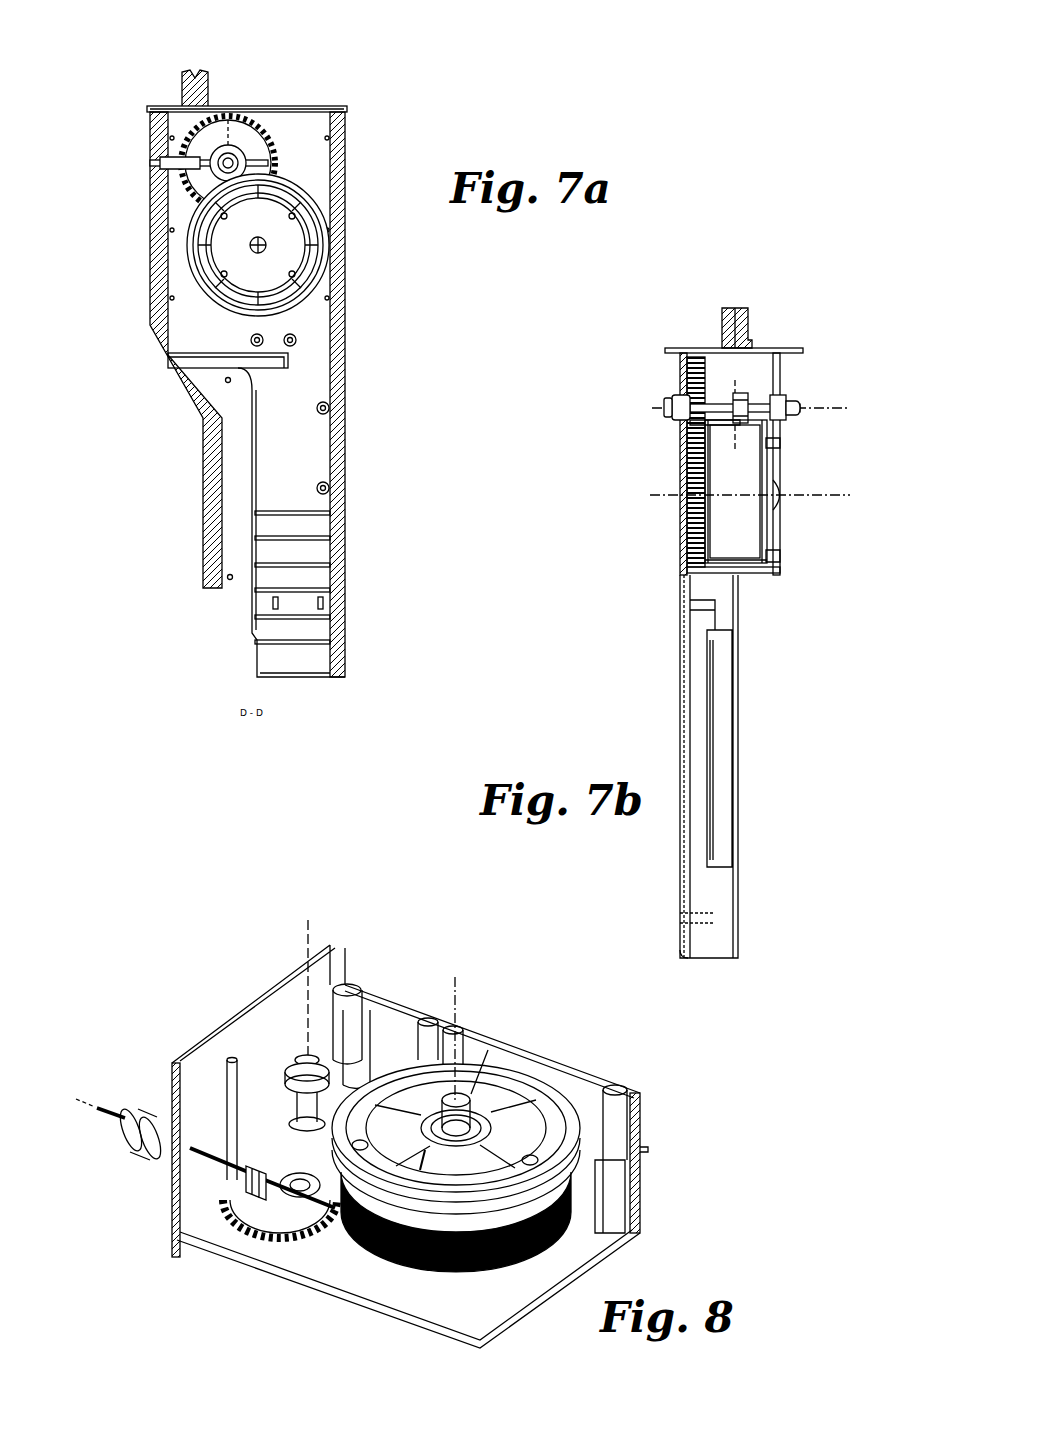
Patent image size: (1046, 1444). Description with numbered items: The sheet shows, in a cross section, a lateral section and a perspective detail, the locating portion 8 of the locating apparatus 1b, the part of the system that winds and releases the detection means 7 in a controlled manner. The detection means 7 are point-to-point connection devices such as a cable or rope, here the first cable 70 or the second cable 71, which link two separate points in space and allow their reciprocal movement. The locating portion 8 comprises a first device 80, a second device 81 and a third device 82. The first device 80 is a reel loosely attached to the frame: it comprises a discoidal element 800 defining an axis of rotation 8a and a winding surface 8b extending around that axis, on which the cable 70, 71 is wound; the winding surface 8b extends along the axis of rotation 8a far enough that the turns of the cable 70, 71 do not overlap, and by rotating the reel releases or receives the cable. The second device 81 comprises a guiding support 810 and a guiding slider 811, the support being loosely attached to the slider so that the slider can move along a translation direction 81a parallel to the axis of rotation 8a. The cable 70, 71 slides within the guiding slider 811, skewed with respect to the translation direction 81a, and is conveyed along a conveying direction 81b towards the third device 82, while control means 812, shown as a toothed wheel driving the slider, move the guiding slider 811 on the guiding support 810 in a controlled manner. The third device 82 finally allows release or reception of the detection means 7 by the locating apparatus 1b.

In FIG. 7A, the locating apparatus 1b is at (393, 343).
In FIG. 7B, the locating apparatus 1b is at (648, 582).
In FIG. 8, the detection means 7 is at (425, 1277).
In FIG. 8, the first cable 70 is at (115, 1108).
In FIG. 8, the second cable 71 is at (120, 1130).
In FIG. 7A, the locating portion 8 is at (130, 295).
In FIG. 7B, the locating portion 8 is at (638, 350).
In FIG. 7B, the axis of rotation 8a is at (673, 497).
In FIG. 8, the axis of rotation 8a is at (458, 1012).
In FIG. 7B, the winding surface 8b is at (755, 547).
In FIG. 8, the winding surface 8b is at (507, 1217).
In FIG. 7A, the first device 80 is at (330, 227).
In FIG. 7B, the first device 80 is at (765, 597).
In FIG. 8, the first device 80 is at (490, 1300).
In FIG. 7A, the discoidal element 800 is at (258, 245).
In FIG. 7B, the discoidal element 800 is at (768, 533).
In FIG. 8, the discoidal element 800 is at (533, 1087).
In FIG. 7A, the second device 81 is at (178, 188).
In FIG. 7B, the second device 81 is at (807, 393).
In FIG. 8, the second device 81 is at (226, 1047).
In FIG. 7B, the translation direction 81a is at (827, 408).
In FIG. 8, the translation direction 81a is at (307, 940).
In FIG. 7A, the conveying direction 81b is at (245, 148).
In FIG. 7B, the conveying direction 81b is at (700, 428).
In FIG. 8, the conveying direction 81b is at (84, 1105).
In FIG. 7A, the guiding support 810 is at (247, 147).
In FIG. 7B, the guiding support 810 is at (680, 397).
In FIG. 8, the guiding support 810 is at (294, 1117).
In FIG. 7A, the guiding slider 811 is at (150, 168).
In FIG. 7B, the guiding slider 811 is at (733, 402).
In FIG. 8, the guiding slider 811 is at (250, 1185).
In FIG. 7A, the control means 812 is at (205, 135).
In FIG. 7B, the control means 812 is at (680, 470).
In FIG. 8, the control means 812 is at (273, 1252).
In FIG. 7A, the third device 82 is at (208, 88).
In FIG. 7B, the third device 82 is at (750, 320).